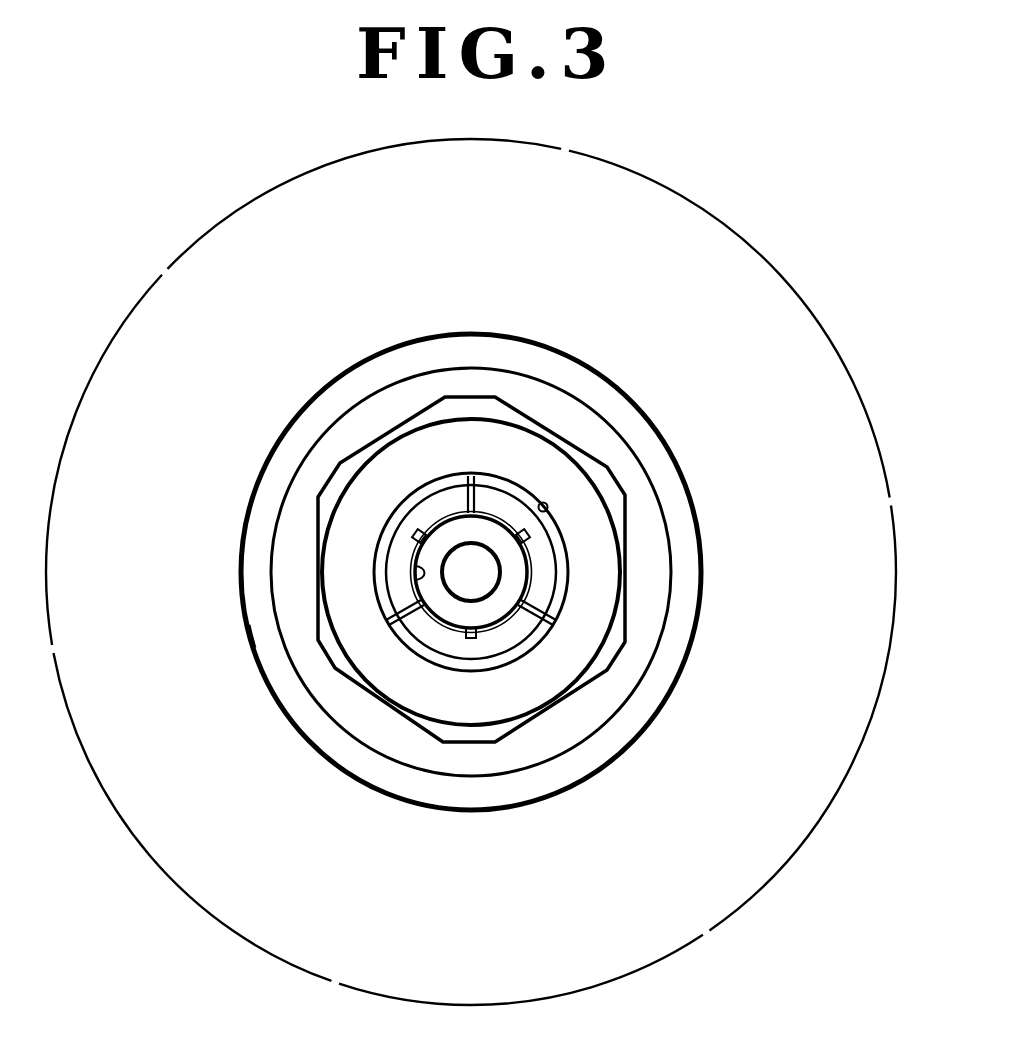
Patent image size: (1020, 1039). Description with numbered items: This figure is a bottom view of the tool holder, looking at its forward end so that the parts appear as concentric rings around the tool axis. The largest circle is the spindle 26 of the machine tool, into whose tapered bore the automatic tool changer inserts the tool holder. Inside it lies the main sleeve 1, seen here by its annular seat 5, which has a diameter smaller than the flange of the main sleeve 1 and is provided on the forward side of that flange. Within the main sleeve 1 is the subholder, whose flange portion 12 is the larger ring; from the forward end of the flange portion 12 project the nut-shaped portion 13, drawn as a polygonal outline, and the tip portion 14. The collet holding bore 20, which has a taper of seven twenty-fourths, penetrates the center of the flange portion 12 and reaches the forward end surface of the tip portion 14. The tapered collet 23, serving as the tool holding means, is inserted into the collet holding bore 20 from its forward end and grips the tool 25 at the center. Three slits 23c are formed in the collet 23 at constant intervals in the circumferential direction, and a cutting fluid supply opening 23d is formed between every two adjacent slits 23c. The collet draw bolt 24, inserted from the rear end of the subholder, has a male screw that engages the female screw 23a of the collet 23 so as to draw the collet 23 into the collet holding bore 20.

The main sleeve 1 is at (636, 396).
The annular seat 5 is at (252, 650).
The flange portion 12 is at (650, 660).
The nut-shaped portion 13 is at (617, 508).
The tip portion 14 is at (652, 588).
The collet holding bore 20 is at (548, 505).
The tapered collet 23 is at (542, 596).
The female screw 23a is at (497, 600).
The slits 23c is at (470, 493).
The cutting fluid supply opening 23d is at (471, 640).
The collet draw bolt 24 is at (462, 582).
The tool 25 is at (420, 572).
The spindle 26 is at (704, 206).